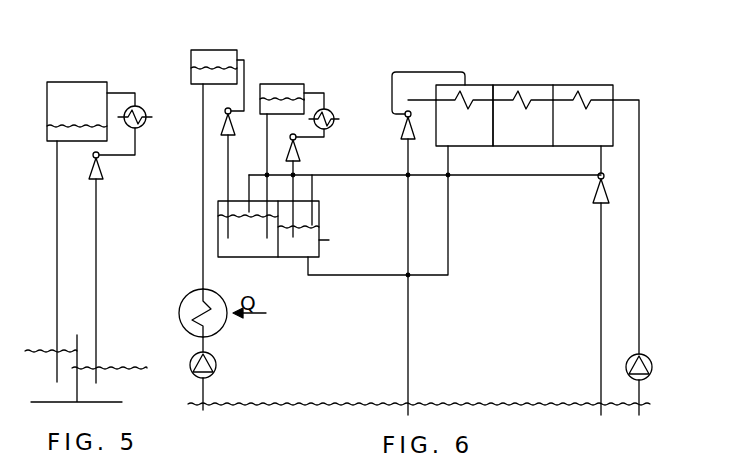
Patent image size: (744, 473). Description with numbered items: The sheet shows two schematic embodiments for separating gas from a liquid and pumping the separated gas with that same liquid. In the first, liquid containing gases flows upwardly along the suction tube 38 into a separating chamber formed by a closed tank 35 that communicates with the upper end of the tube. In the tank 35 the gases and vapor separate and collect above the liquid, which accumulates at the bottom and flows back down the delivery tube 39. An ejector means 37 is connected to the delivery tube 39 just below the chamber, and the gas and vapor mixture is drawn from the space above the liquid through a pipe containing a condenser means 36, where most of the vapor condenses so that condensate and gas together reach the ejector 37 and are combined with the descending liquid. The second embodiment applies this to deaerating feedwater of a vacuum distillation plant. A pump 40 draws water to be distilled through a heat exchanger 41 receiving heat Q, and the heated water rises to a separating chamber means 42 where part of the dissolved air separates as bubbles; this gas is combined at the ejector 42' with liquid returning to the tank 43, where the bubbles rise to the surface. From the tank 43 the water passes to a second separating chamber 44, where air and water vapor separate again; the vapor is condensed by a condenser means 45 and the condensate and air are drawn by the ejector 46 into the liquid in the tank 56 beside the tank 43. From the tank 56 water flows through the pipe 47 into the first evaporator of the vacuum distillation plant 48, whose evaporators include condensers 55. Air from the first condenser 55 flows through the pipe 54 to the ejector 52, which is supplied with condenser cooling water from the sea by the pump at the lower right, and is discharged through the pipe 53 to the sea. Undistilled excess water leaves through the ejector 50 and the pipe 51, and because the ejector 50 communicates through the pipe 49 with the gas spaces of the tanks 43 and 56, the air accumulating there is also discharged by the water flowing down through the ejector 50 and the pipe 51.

In FIG. 5, the tank 35 is at (82, 87).
In FIG. 5, the condenser means 36 is at (146, 110).
In FIG. 5, the ejector means 37 is at (104, 173).
In FIG. 5, the suction tube 38 is at (57, 241).
In FIG. 5, the delivery tube 39 is at (97, 241).
In FIG. 6, the pump 40 is at (216, 364).
In FIG. 6, the heat exchanger 41 is at (180, 306).
In FIG. 6, the separating chamber means 42 is at (214, 158).
In FIG. 6, the ejector 42' is at (242, 149).
In FIG. 6, the tank 43 is at (270, 258).
In FIG. 6, the second separating chamber 44 is at (283, 84).
In FIG. 6, the condenser means 45 is at (334, 112).
In FIG. 6, the ejector 46 is at (301, 156).
In FIG. 6, the pipe 47 is at (449, 243).
In FIG. 6, the vacuum distillation plant 48 is at (538, 85).
In FIG. 6, the pipe 49 is at (530, 177).
In FIG. 6, the ejector 50 is at (604, 177).
In FIG. 6, the pipe 51 is at (600, 278).
In FIG. 6, the ejector 52 is at (398, 124).
In FIG. 6, the pipe 53 is at (407, 238).
In FIG. 6, the pipe 54 is at (430, 72).
In FIG. 6, the condensers 55 is at (486, 85).
In FIG. 6, the tank 56 is at (320, 238).